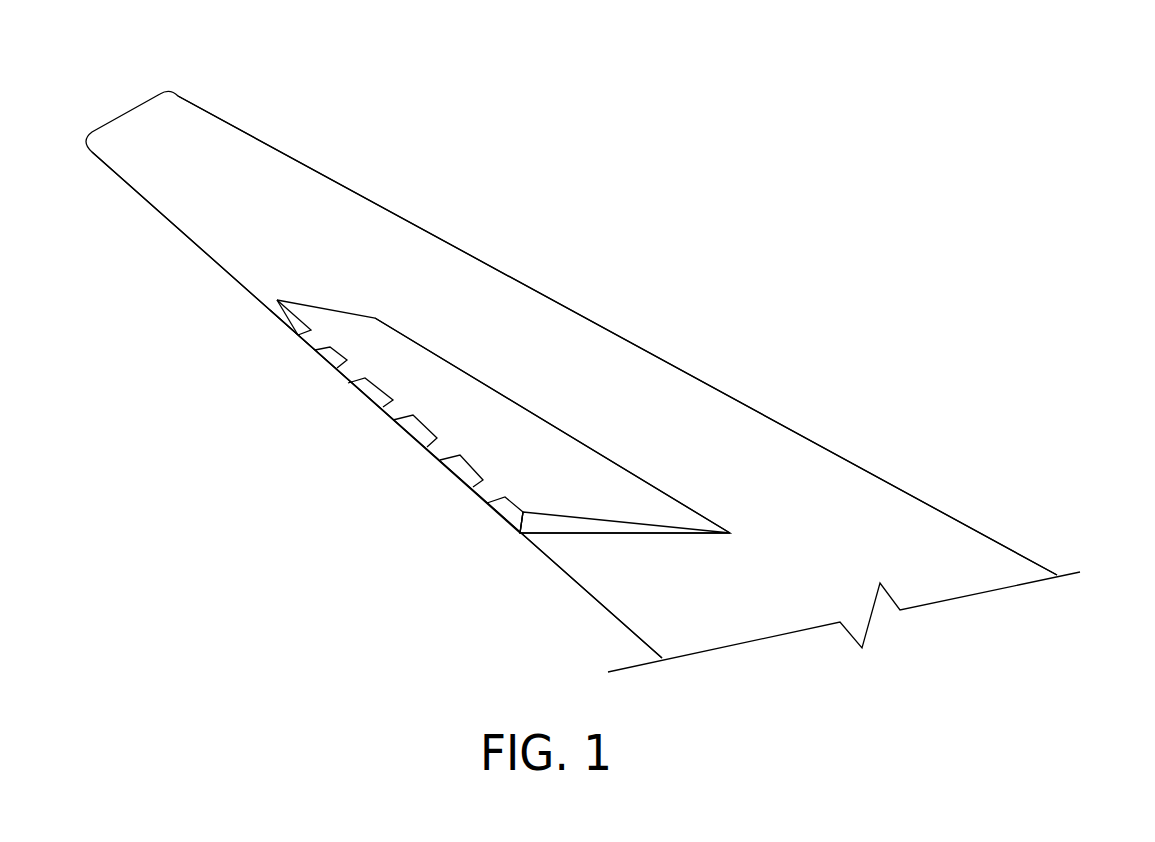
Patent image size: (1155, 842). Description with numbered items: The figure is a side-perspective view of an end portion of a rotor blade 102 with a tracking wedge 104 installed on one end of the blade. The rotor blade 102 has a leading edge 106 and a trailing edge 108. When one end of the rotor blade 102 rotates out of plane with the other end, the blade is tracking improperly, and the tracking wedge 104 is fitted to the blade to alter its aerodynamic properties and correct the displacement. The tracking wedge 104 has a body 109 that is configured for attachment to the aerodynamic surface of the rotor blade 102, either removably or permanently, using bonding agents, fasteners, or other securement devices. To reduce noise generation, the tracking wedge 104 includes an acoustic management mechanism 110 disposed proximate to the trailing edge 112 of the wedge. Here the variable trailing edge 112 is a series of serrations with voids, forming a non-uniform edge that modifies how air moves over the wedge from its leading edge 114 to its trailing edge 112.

The rotor blade 102 is at (157, 96).
The tracking wedge 104 is at (338, 310).
The leading edge 106 is at (420, 212).
The trailing edge 108 is at (185, 257).
The body 109 is at (648, 538).
The acoustic management mechanism 110 is at (473, 493).
The trailing edge 112 is at (273, 333).
The leading edge 114 is at (472, 358).